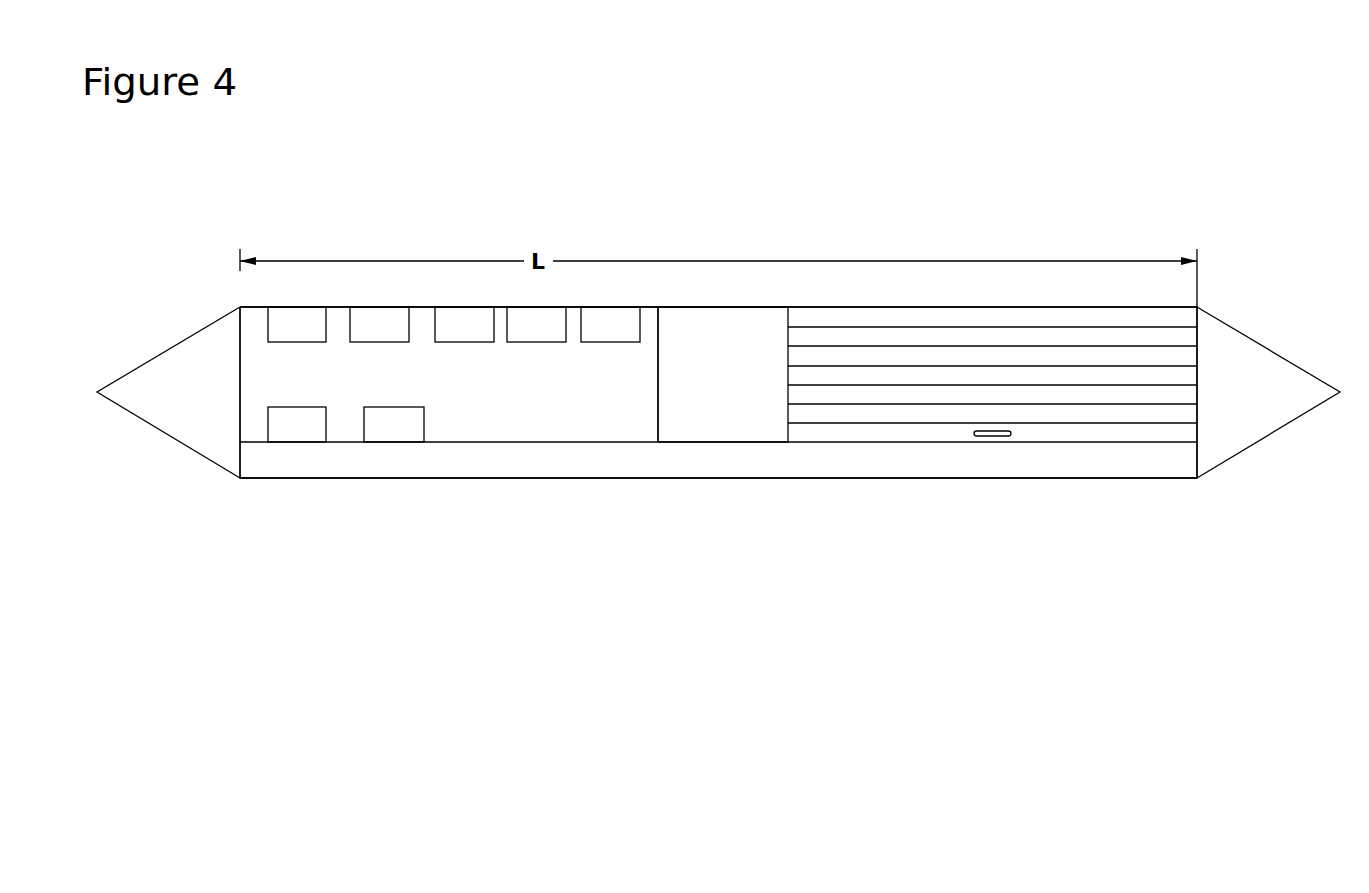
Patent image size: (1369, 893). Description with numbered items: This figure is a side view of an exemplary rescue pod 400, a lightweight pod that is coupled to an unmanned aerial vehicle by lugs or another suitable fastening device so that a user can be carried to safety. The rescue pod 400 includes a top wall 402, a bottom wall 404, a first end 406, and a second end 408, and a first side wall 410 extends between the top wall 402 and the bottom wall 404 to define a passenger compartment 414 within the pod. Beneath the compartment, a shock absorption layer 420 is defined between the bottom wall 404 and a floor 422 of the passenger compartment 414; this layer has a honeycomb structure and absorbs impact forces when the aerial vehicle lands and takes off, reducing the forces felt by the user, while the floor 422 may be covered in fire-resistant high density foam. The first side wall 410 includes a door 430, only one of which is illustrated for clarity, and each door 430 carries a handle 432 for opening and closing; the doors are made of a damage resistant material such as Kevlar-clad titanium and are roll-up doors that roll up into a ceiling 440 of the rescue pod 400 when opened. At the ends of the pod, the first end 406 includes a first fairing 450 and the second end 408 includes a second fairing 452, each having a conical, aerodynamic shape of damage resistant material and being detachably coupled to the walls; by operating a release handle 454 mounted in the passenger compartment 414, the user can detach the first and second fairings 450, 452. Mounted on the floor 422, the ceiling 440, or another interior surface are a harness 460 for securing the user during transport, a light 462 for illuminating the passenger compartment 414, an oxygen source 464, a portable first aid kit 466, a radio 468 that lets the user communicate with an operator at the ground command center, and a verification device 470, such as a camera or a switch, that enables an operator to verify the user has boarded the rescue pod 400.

The rescue pod 400 is at (415, 207).
The top wall 402 is at (718, 307).
The bottom wall 404 is at (1025, 478).
The first end 406 is at (238, 318).
The second end 408 is at (1199, 332).
The first side wall 410 is at (723, 374).
The passenger compartment 414 is at (262, 391).
The shock absorption layer 420 is at (1136, 460).
The floor 422 is at (490, 442).
The door 430 is at (1023, 318).
The handle 432 is at (978, 437).
The ceiling 440 is at (573, 307).
The first fairing 450 is at (132, 382).
The second fairing 452 is at (1267, 420).
The release handle 454 is at (297, 324).
The harness 460 is at (297, 424).
The light 462 is at (379, 324).
The oxygen source 464 is at (464, 324).
The portable first aid kit 466 is at (394, 424).
The radio 468 is at (536, 324).
The verification device 470 is at (610, 324).